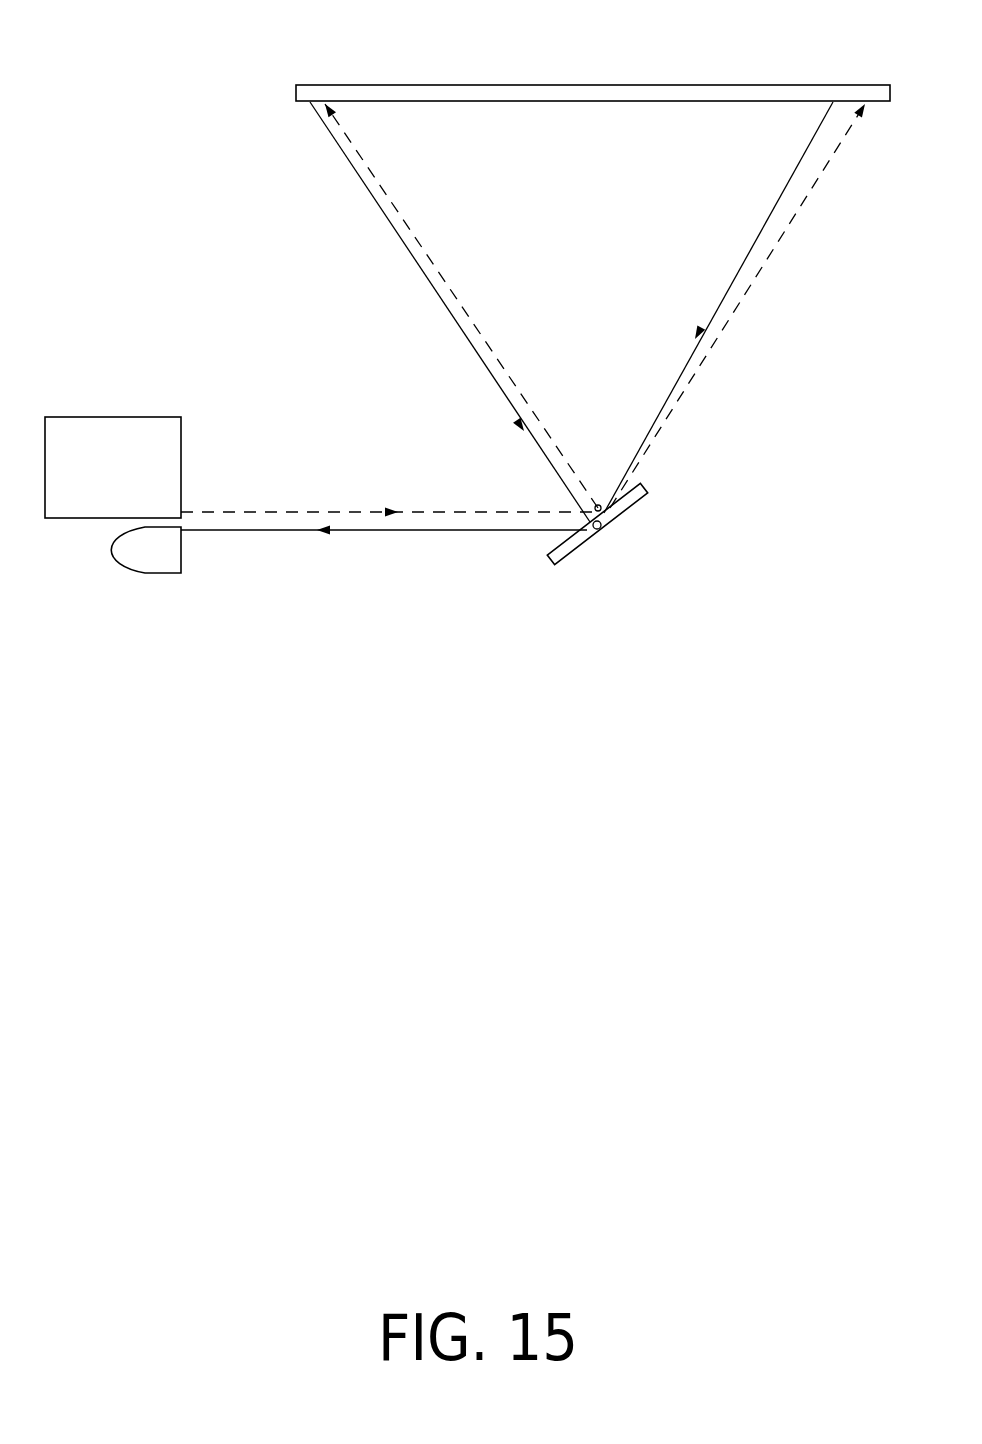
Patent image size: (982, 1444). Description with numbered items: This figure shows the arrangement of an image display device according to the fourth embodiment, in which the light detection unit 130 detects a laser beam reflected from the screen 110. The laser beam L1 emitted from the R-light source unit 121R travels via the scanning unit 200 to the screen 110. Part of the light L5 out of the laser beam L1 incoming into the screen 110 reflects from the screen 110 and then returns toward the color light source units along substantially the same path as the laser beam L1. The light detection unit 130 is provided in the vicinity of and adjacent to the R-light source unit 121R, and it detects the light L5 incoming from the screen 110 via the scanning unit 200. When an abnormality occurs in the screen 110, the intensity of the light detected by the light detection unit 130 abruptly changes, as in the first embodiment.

The screen 110 is at (390, 88).
The R-light source unit 121R is at (160, 416).
The light detection unit 130 is at (172, 575).
The scanning unit 200 is at (628, 508).
The laser beam L1 is at (399, 212).
The light reflected from the screen L5 is at (408, 258).